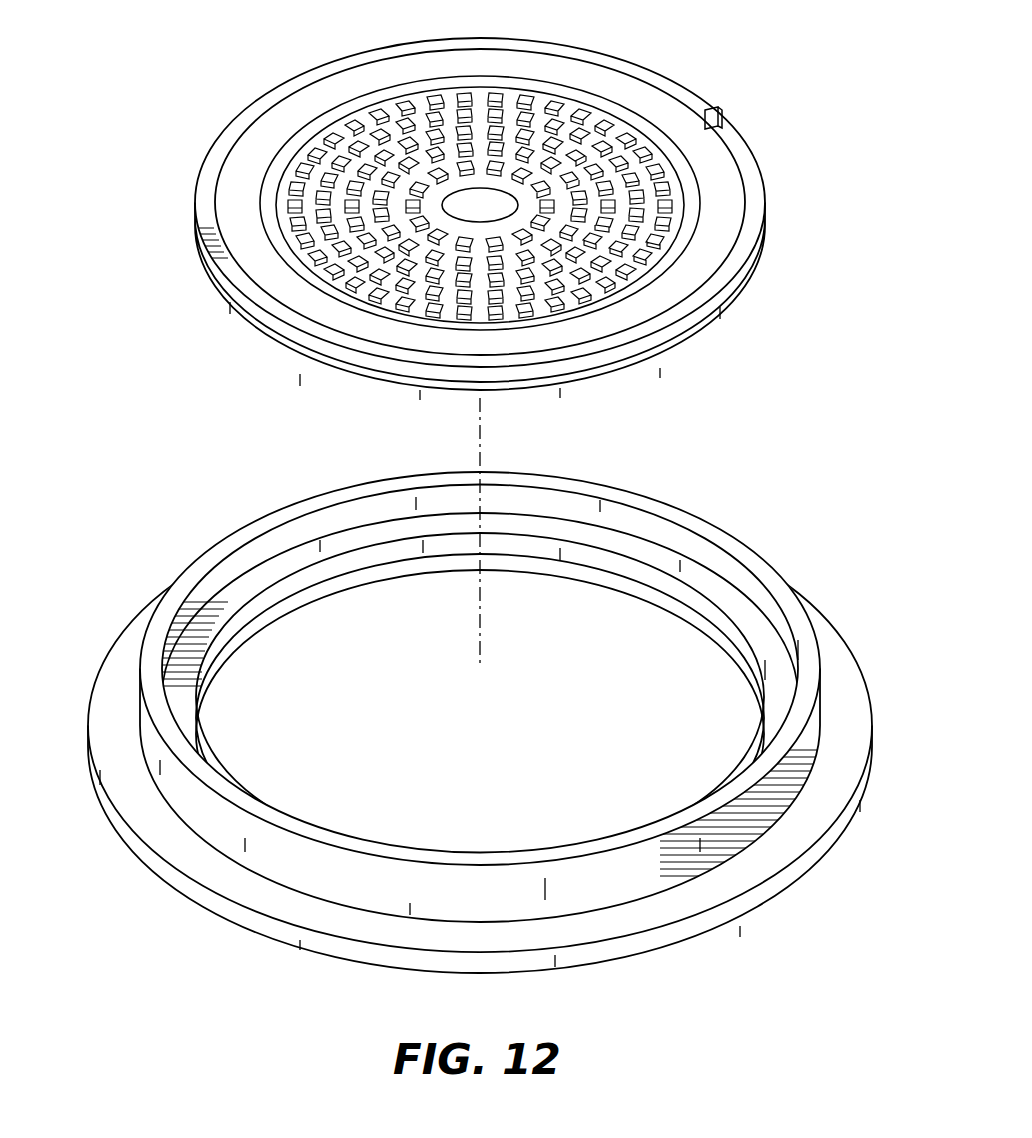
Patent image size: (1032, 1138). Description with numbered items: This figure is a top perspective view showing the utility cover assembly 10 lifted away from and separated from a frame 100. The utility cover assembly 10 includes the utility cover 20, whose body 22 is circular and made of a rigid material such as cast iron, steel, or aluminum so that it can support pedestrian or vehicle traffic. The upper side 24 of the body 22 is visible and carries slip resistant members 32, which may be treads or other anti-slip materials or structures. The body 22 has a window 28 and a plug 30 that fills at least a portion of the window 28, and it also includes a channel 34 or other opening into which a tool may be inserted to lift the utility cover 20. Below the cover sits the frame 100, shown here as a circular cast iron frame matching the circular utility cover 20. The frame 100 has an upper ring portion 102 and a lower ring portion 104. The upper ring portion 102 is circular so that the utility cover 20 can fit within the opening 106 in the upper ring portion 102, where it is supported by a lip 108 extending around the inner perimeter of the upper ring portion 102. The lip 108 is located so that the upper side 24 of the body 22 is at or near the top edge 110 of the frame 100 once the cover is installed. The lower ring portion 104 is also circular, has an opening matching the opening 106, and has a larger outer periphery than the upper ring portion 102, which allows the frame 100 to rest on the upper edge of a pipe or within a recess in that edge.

The utility cover assembly 10 is at (815, 112).
The utility cover 20 is at (463, 200).
The body 22 is at (668, 315).
The upper side 24 is at (232, 182).
The window 28 is at (447, 186).
The plug 30 is at (494, 218).
The slip resistant member 32 is at (290, 248).
The channel 34 is at (731, 118).
The frame 100 is at (479, 705).
The upper ring portion 102 is at (178, 775).
The lower ring portion 104 is at (195, 880).
The opening 106 is at (335, 617).
The lip 108 is at (762, 630).
The top edge 110 is at (680, 512).